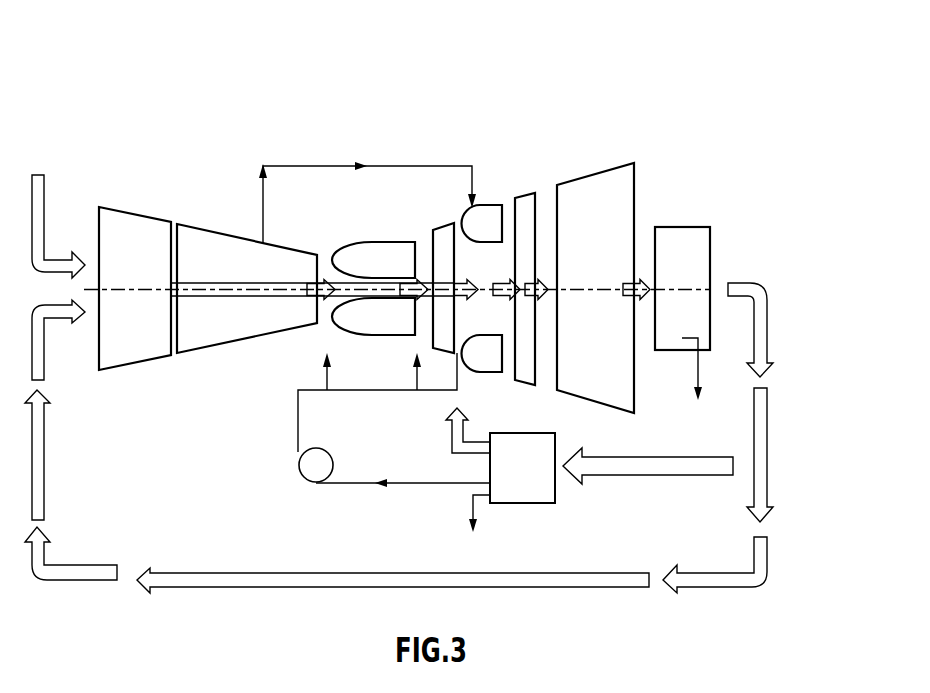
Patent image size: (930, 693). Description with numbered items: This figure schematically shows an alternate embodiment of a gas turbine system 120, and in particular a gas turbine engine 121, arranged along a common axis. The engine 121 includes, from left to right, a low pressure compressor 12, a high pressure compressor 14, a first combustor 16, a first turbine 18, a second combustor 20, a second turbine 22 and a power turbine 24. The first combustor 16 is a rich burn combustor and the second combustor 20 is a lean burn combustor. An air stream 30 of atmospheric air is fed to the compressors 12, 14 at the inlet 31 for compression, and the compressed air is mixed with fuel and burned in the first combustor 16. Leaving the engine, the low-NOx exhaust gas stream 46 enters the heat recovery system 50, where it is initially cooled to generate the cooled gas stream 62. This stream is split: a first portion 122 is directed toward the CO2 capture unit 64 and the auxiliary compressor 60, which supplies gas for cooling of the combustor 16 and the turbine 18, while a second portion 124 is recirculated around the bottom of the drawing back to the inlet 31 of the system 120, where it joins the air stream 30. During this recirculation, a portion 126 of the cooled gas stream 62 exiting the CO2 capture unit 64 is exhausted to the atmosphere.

The gas turbine system 120 is at (251, 34).
The gas turbine engine 121 is at (162, 158).
The air stream 30 is at (46, 195).
The inlet 31 is at (92, 344).
The low pressure compressor 12 is at (122, 368).
The high pressure compressor 14 is at (208, 348).
The first combustor 16 is at (377, 242).
The first turbine 18 is at (440, 229).
The second combustor 20 is at (496, 205).
The second turbine 22 is at (525, 197).
The power turbine 24 is at (590, 176).
The low-NOx exhaust gas stream 46 is at (641, 281).
The heat recovery system 50 is at (693, 227).
The cooled gas stream 62 is at (764, 290).
The first portion 122 is at (648, 457).
The second portion 124 is at (769, 478).
The portion of the cooled gas stream 126 is at (455, 450).
The auxiliary compressor 60 is at (303, 479).
The CO2 capture unit 64 is at (521, 503).